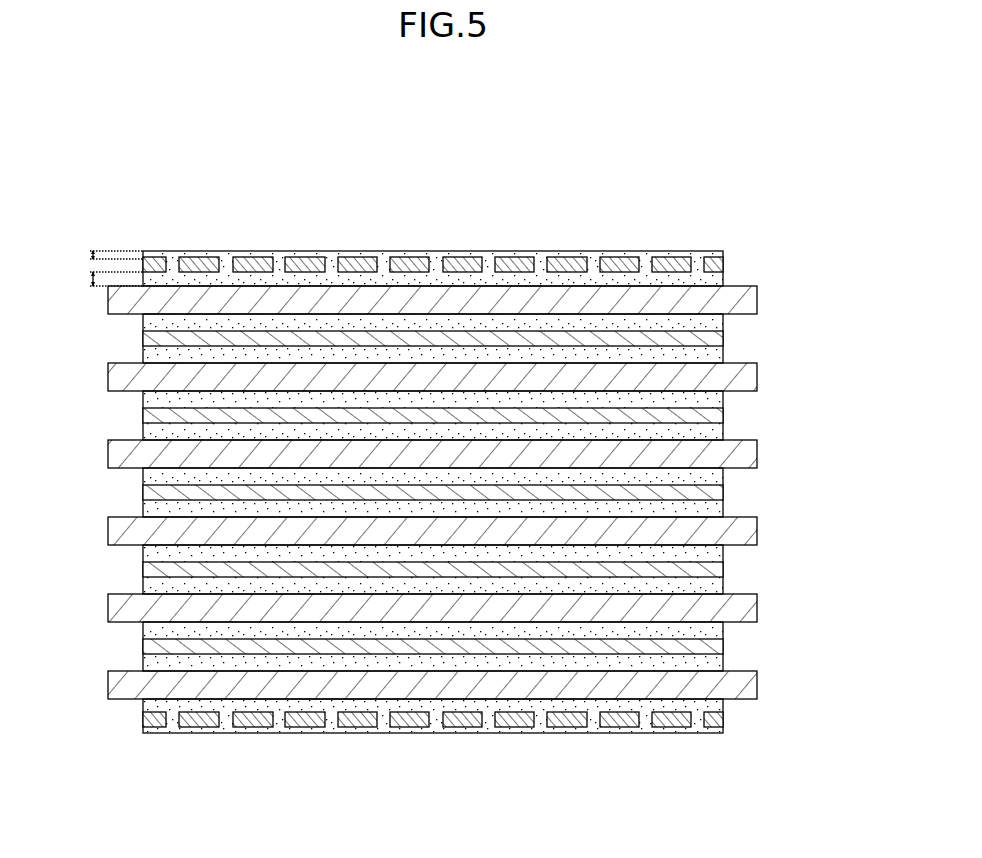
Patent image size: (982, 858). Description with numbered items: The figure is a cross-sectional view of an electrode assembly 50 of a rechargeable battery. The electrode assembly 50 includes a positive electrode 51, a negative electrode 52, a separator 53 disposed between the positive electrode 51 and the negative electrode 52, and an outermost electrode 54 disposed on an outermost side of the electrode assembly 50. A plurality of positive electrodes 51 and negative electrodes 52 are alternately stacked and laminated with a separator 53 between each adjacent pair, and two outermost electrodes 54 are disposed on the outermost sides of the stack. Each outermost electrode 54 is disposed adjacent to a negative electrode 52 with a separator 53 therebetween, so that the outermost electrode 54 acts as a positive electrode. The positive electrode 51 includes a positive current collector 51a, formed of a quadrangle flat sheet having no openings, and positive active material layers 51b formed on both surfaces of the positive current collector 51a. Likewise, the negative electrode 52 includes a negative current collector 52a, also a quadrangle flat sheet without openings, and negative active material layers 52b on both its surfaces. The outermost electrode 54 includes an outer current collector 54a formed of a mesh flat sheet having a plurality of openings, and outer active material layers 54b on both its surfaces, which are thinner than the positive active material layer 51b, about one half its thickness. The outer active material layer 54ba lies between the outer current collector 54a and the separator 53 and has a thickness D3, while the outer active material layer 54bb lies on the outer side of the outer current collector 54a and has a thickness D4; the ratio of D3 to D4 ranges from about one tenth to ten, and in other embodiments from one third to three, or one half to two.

The electrode assembly 50 is at (478, 128).
The positive electrode 51 is at (481, 397).
The positive current collector 51a is at (637, 412).
The positive active material layer 51b is at (572, 397).
The negative electrode 52 is at (481, 437).
The negative current collector 52a is at (293, 338).
The negative active material layer 52b is at (223, 322).
The separator 53 is at (750, 292).
The outermost electrode 54 is at (481, 451).
The outer current collector 54a is at (461, 264).
The outer active material layer 54b is at (433, 228).
The outer active material layer 54ba is at (342, 280).
The outer active material layer 54bb is at (415, 253).
The thickness of outer active material layer D3 is at (100, 280).
The thickness of outer active material layer D4 is at (100, 252).